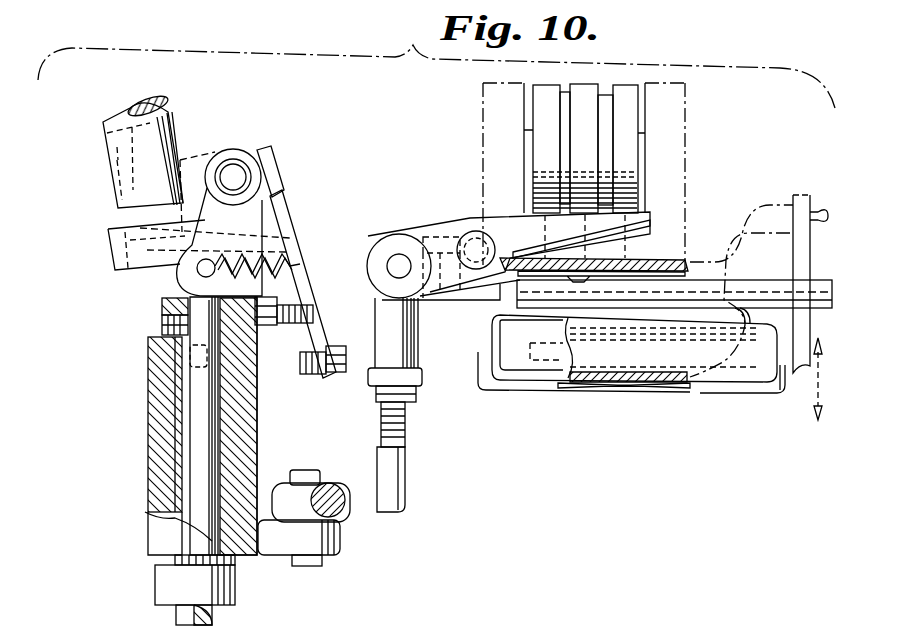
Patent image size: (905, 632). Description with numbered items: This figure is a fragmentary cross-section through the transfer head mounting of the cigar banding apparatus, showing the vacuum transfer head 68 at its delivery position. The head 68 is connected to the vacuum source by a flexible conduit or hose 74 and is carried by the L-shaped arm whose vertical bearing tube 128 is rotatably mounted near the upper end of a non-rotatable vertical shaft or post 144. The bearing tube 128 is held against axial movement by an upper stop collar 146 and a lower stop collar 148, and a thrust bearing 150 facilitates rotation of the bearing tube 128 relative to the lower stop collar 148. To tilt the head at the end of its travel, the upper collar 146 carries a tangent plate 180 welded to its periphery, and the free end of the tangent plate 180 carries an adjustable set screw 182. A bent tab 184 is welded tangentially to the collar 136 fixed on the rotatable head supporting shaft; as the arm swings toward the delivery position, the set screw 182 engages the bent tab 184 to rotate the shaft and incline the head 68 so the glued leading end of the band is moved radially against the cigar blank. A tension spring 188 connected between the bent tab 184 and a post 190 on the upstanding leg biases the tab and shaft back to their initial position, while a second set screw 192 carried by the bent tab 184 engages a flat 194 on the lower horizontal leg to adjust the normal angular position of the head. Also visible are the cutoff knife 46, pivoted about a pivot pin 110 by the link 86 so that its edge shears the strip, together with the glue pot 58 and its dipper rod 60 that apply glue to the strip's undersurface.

The cutoff knife 46 is at (452, 222).
The glue pot 58 is at (593, 378).
The dipper rod 60 is at (652, 358).
The vacuum transfer head 68 is at (276, 190).
The flexible conduit or hose 74 is at (162, 110).
The link 86 is at (408, 487).
The pivot pin 110 is at (400, 256).
The vertical bearing tube 128 is at (256, 441).
The collar 136 is at (231, 150).
The vertical shaft or post 144 is at (190, 447).
The upper stop collar 146 is at (165, 303).
The lower stop collar 148 is at (157, 583).
The thrust bearing 150 is at (173, 559).
The tangent plate 180 is at (273, 306).
The adjustable set screw 182 is at (303, 306).
The bent tab 184 is at (333, 324).
The tension spring 188 is at (283, 238).
The post 190 is at (197, 276).
The second set screw 192 is at (300, 356).
The flat 194 is at (252, 378).